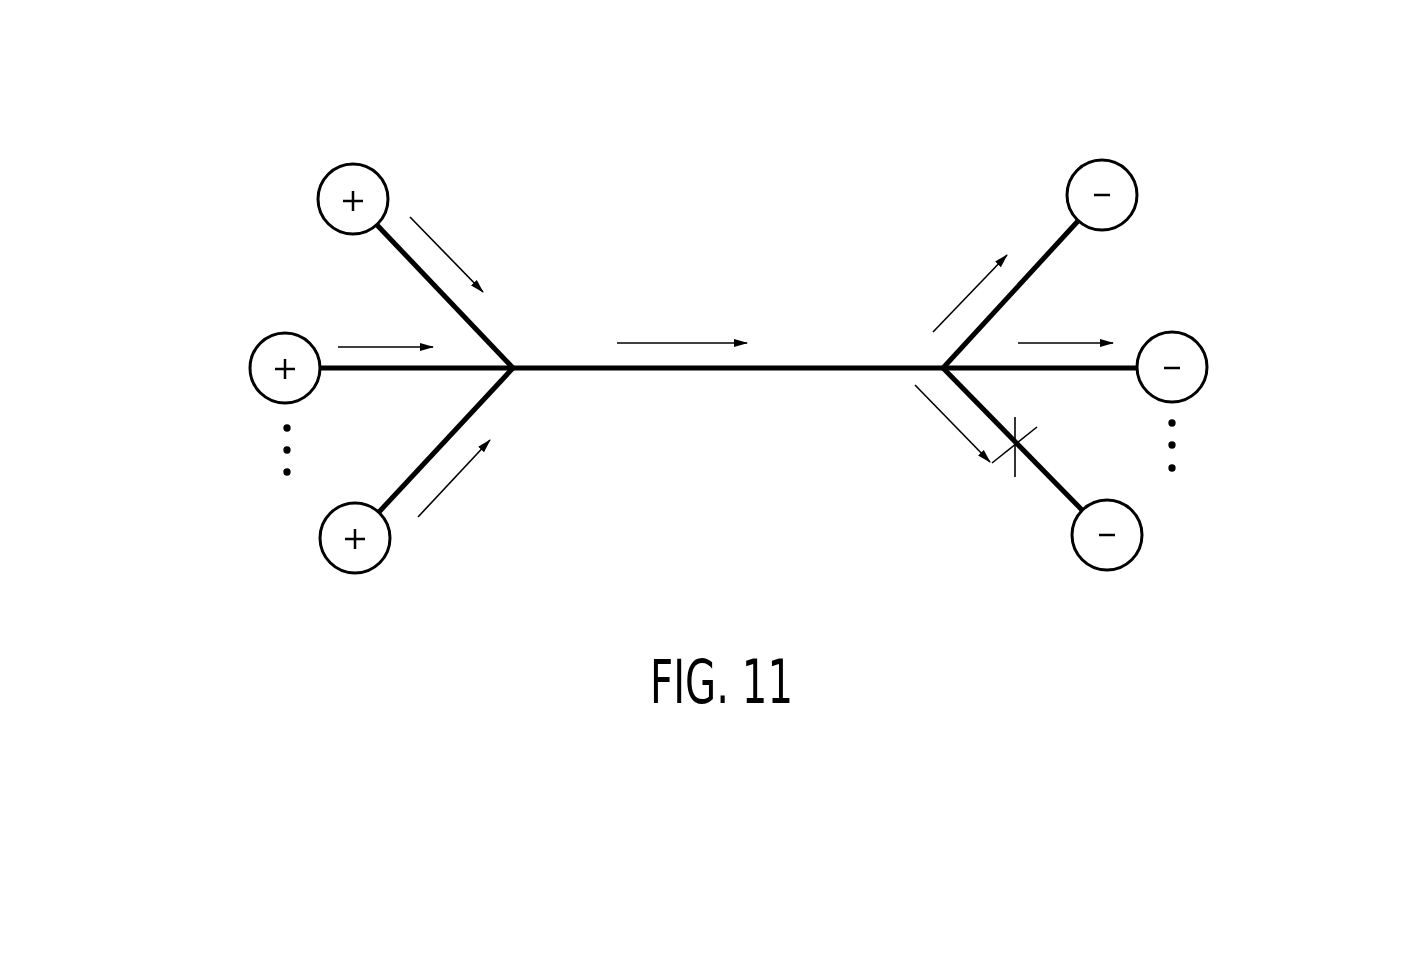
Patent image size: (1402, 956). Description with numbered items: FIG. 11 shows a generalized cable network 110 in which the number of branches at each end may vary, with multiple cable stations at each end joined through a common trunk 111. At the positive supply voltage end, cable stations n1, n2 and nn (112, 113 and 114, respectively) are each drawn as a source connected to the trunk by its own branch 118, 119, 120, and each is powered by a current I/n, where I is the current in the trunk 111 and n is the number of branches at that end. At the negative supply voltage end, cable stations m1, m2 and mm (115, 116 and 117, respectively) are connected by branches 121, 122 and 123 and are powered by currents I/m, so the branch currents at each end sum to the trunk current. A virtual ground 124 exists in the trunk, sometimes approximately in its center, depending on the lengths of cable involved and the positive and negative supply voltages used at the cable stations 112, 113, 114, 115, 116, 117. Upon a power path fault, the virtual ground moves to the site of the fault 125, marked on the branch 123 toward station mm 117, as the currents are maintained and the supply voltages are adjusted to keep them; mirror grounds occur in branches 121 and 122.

The current distribution system 110 is at (761, 105).
The trunk 111 is at (718, 372).
The cable station n1 112 is at (318, 225).
The cable station n2 113 is at (254, 391).
The cable station nn 114 is at (326, 521).
The cable station m1 115 is at (1133, 217).
The cable station m2 116 is at (1203, 389).
The cable station mm 117 is at (1140, 519).
The line from station n1 118 is at (485, 330).
The line from station n2 119 is at (367, 372).
The line from station nn 120 is at (485, 406).
The branch 121 is at (1048, 245).
The branch 122 is at (1097, 372).
The line to station mm 123 is at (1053, 493).
The virtual ground 124 is at (832, 350).
The fault 125 is at (1003, 470).